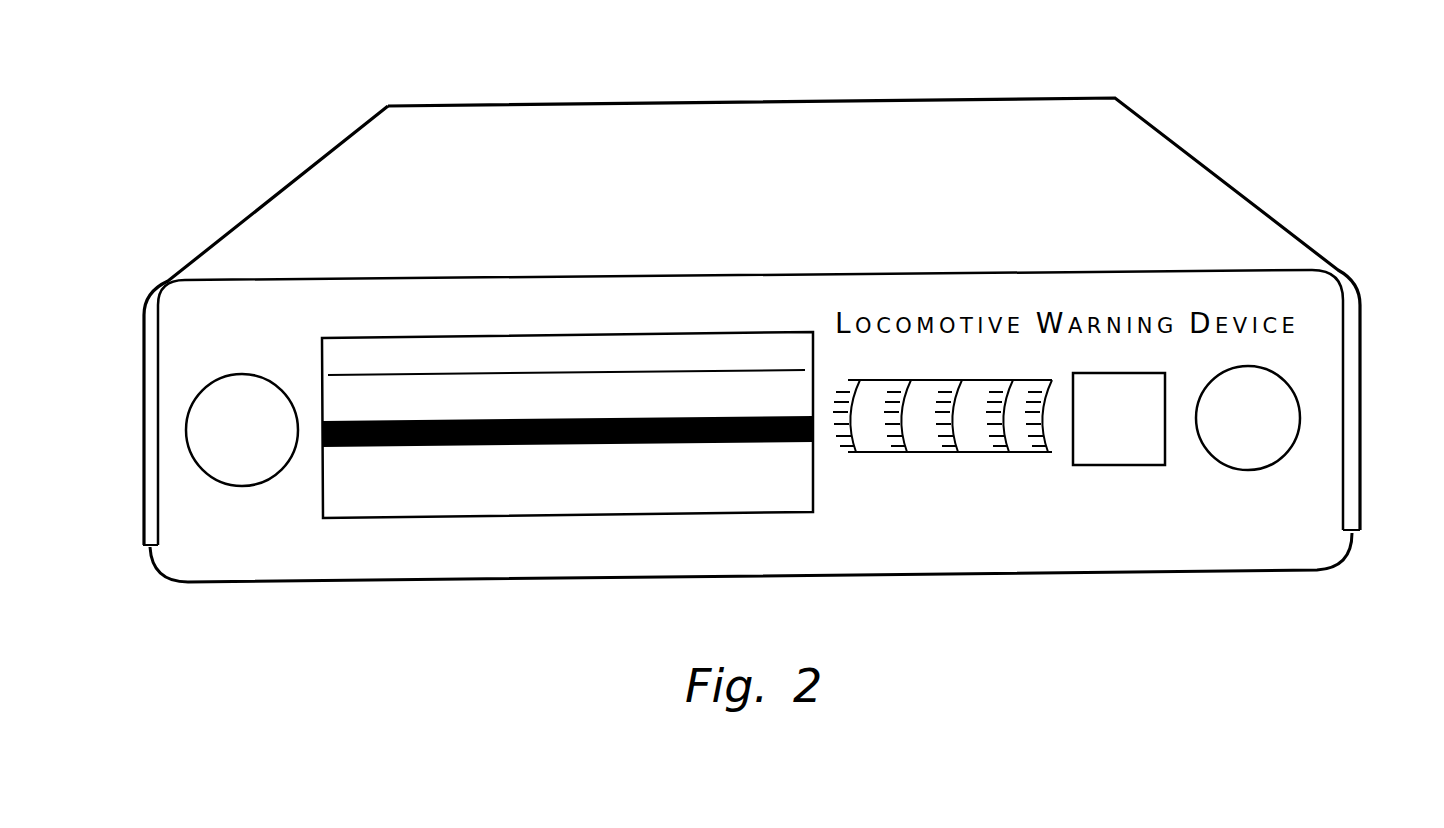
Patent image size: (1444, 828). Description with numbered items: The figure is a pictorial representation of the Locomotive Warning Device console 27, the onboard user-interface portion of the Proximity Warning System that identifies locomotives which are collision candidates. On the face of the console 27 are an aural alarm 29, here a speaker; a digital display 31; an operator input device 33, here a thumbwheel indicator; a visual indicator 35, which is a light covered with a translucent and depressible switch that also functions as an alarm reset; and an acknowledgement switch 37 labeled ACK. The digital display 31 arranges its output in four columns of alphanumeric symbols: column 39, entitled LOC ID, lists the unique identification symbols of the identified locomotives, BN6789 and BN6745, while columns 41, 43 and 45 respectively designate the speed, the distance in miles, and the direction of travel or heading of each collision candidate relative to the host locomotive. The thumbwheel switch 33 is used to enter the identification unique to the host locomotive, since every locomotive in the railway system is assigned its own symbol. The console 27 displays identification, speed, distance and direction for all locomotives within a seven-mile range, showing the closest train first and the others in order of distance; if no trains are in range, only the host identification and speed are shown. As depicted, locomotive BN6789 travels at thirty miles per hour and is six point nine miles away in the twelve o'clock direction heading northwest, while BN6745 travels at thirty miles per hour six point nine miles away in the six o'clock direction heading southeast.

The Locomotive Warning Device console 27 is at (891, 124).
The aural alarm 29 is at (238, 416).
The digital display 31 is at (558, 429).
The operator input device 33 is at (880, 457).
The visual indicator 35 is at (1263, 403).
The acknowledgement switch 37 is at (1098, 438).
The LOC ID column 39 is at (363, 346).
The SPEED column 41 is at (503, 346).
The DIST column 43 is at (603, 346).
The DIR/HDNG column 45 is at (725, 346).